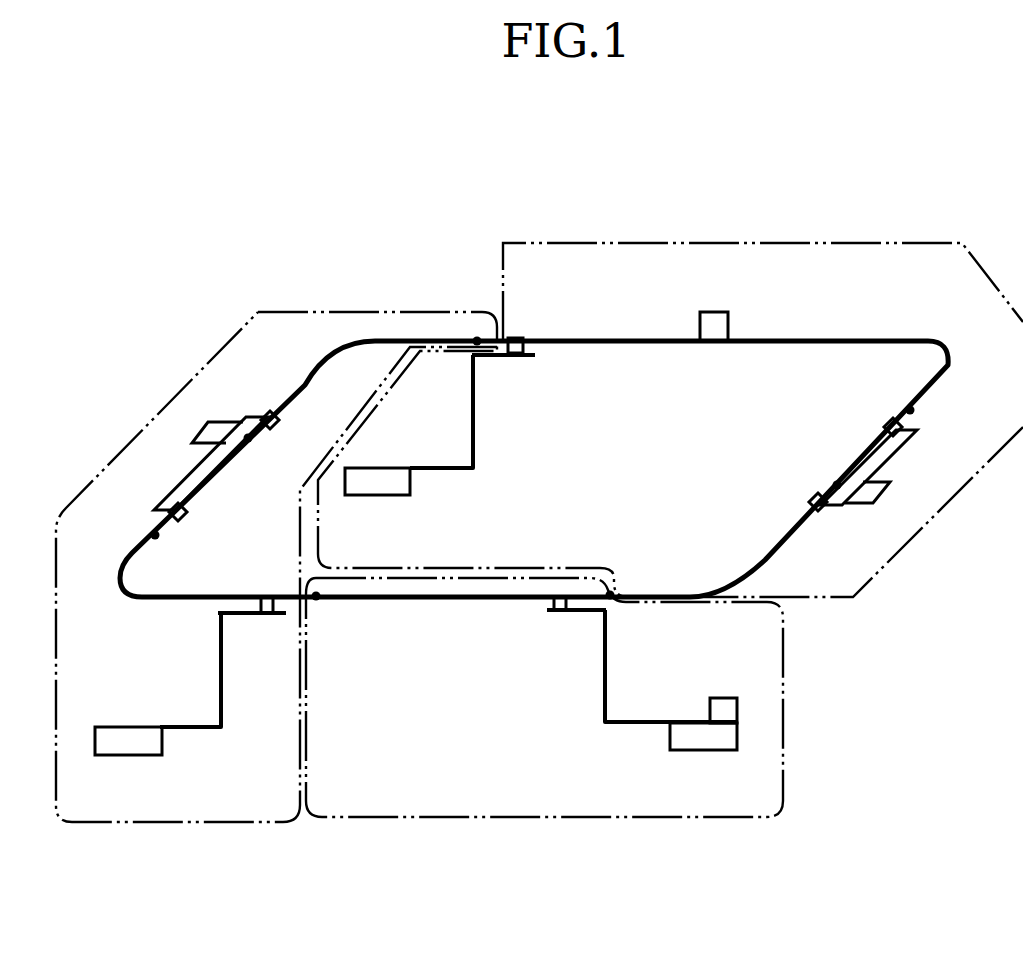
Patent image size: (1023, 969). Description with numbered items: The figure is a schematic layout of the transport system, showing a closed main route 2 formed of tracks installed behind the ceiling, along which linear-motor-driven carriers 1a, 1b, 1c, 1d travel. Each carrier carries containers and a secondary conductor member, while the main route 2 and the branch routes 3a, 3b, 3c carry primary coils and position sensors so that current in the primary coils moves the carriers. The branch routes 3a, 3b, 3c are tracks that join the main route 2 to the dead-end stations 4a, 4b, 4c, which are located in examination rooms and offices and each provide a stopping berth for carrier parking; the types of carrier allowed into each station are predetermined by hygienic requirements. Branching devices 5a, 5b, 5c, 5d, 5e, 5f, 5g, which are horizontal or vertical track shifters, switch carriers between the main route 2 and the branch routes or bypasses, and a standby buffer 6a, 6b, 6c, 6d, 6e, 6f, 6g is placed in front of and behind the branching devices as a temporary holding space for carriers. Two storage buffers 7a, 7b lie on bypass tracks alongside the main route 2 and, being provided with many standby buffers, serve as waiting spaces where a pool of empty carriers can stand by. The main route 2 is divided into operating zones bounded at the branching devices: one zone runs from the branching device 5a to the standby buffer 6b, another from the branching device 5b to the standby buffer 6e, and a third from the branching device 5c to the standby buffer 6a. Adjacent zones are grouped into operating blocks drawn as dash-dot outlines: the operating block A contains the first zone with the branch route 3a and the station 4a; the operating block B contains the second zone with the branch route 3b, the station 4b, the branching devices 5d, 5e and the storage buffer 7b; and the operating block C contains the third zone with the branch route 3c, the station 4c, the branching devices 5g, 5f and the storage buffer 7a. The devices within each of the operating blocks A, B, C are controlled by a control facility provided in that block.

The main route 2 is at (369, 340).
The carrier 1a is at (719, 698).
The carrier 1b is at (860, 504).
The carrier 1c is at (716, 312).
The carrier 1d is at (222, 421).
The branch route 3a is at (604, 680).
The branch route 3b is at (223, 668).
The branch route 3c is at (474, 455).
The station 4a is at (705, 751).
The station 4b is at (125, 756).
The station 4c is at (370, 496).
The branching device 5a is at (561, 611).
The branching device 5b is at (263, 596).
The branching device 5c is at (530, 340).
The branching device 5d is at (281, 420).
The branching device 5e is at (188, 512).
The branching device 5f is at (810, 503).
The branching device 5g is at (885, 427).
The standby buffer 6a is at (614, 595).
The standby buffer 6b is at (319, 598).
The standby buffer 6c is at (152, 535).
The standby buffer 6d is at (250, 441).
The standby buffer 6e is at (477, 338).
The standby buffer 6f is at (909, 408).
The standby buffer 6g is at (835, 484).
The storage buffer 7a is at (886, 463).
The storage buffer 7b is at (206, 466).
The operating block A is at (573, 826).
The operating block B is at (102, 467).
The operating block C is at (690, 243).